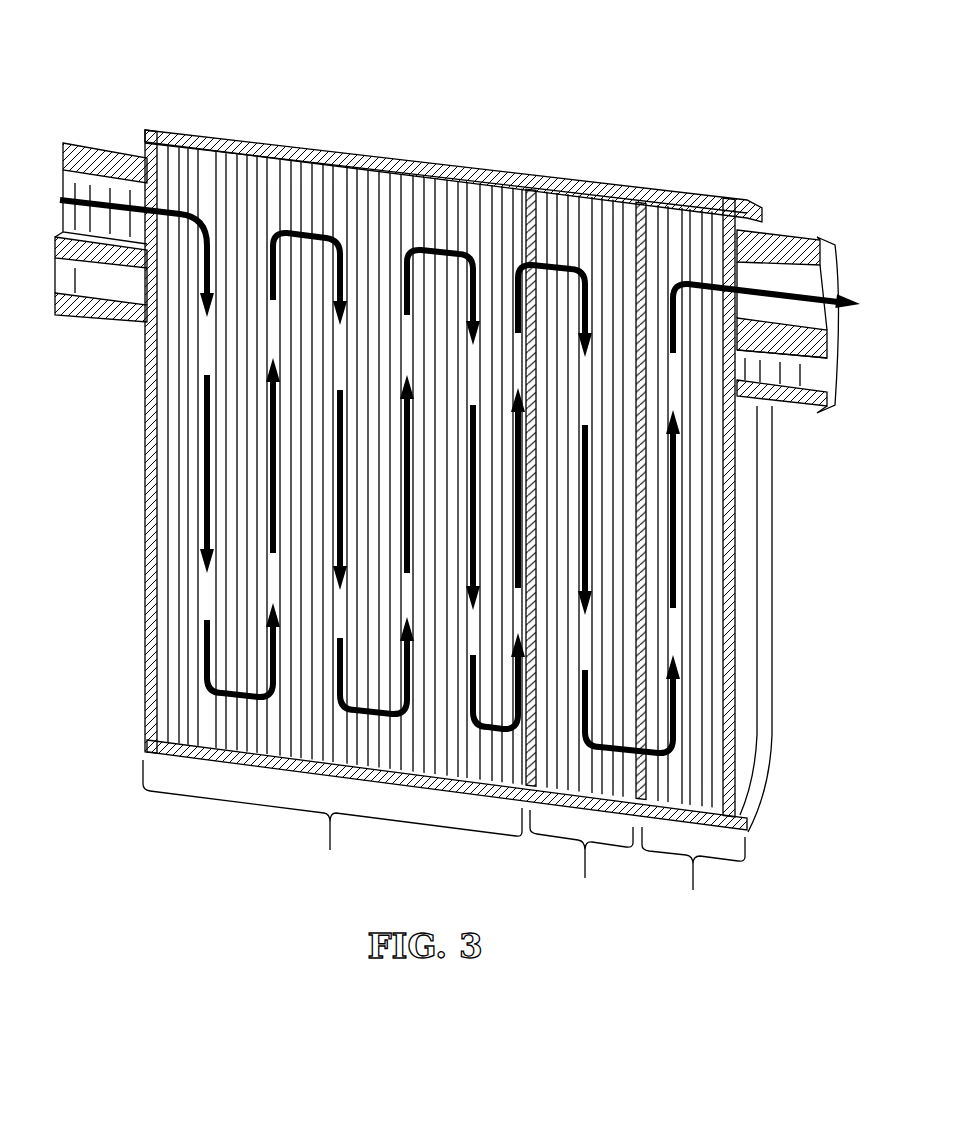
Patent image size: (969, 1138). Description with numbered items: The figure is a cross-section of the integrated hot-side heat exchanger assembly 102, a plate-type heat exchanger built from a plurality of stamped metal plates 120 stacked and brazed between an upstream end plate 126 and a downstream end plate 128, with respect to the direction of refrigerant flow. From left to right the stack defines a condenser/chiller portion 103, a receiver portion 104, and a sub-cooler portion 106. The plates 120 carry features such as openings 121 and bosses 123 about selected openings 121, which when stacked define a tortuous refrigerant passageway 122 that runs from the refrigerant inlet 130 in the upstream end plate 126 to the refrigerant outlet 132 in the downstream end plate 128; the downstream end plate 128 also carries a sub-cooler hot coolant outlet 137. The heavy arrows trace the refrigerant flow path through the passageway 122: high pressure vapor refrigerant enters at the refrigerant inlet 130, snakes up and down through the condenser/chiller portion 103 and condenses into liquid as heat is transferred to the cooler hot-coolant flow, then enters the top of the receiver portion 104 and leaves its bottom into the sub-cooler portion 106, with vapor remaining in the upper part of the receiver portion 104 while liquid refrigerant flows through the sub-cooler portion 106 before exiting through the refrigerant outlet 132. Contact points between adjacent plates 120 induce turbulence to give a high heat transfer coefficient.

The integrated hot-side heat exchanger assembly 102 is at (548, 106).
The condenser/chiller portion 103 is at (332, 817).
The receiver portion 104 is at (581, 857).
The sub-cooler portion 106 is at (693, 873).
The stamped metal plates 120 is at (218, 147).
The openings 121 is at (318, 228).
The refrigerant passageway 122 is at (203, 472).
The bosses 123 is at (507, 222).
The upstream end plate 126 is at (155, 128).
The downstream end plate 128 is at (762, 205).
The refrigerant inlet 130 is at (95, 187).
The refrigerant outlet 132 is at (826, 240).
The sub-cooler hot coolant outlet 137 is at (773, 760).